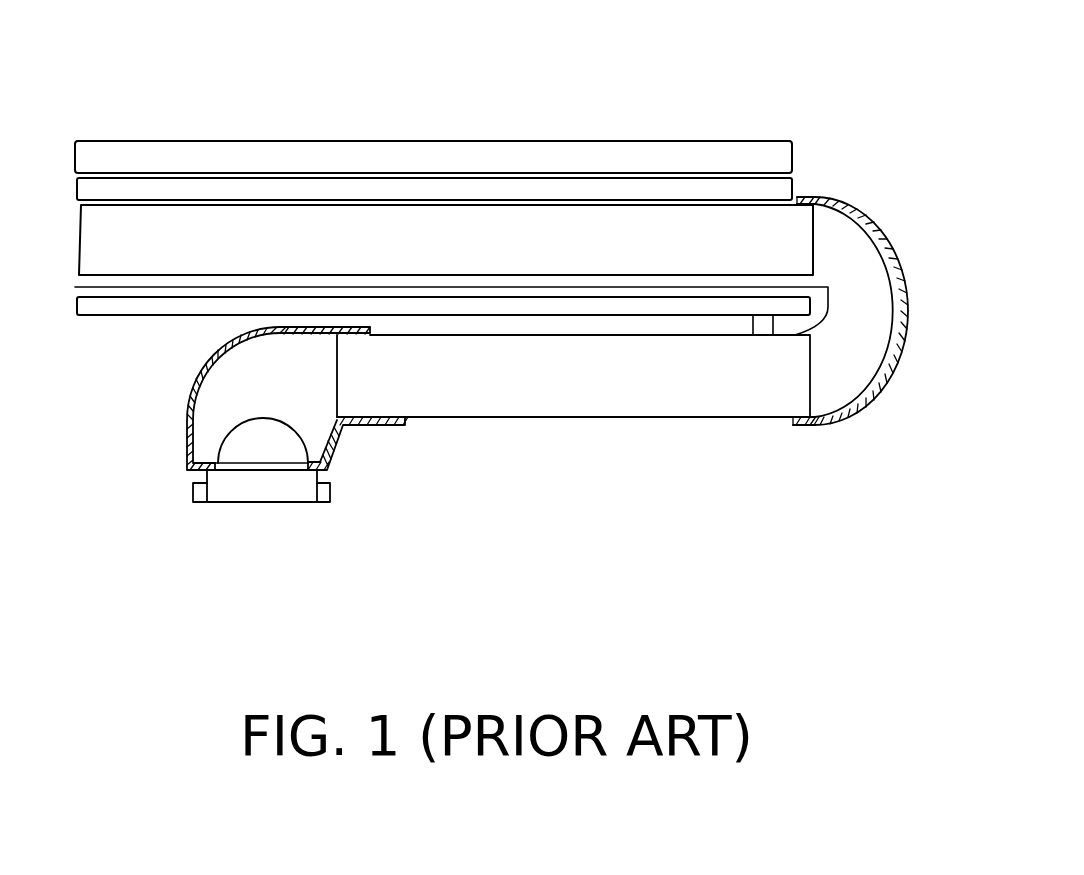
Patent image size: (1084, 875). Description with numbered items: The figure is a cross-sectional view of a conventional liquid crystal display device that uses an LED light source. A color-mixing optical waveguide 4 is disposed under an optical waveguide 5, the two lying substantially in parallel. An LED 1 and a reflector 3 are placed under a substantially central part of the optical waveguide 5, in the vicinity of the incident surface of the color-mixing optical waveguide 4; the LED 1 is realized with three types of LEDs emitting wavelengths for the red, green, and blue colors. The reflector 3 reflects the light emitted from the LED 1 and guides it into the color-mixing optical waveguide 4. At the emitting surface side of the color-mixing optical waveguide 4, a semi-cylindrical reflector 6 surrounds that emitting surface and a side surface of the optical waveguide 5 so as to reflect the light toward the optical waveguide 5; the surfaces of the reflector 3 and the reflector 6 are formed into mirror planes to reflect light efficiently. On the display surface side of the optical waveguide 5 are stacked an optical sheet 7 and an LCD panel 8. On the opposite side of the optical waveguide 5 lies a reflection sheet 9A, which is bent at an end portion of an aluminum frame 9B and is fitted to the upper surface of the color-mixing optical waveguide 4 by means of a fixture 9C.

The LED 1 is at (260, 487).
The reflector 3 is at (188, 412).
The color-mixing optical waveguide 4 is at (617, 395).
The optical waveguide 5 is at (555, 223).
The semi-cylindrical reflector 6 is at (893, 380).
The optical sheet 7 is at (263, 185).
The LCD panel 8 is at (433, 150).
The reflection sheet 9A is at (415, 287).
The aluminum frame 9B is at (513, 303).
The fixture 9C is at (763, 335).